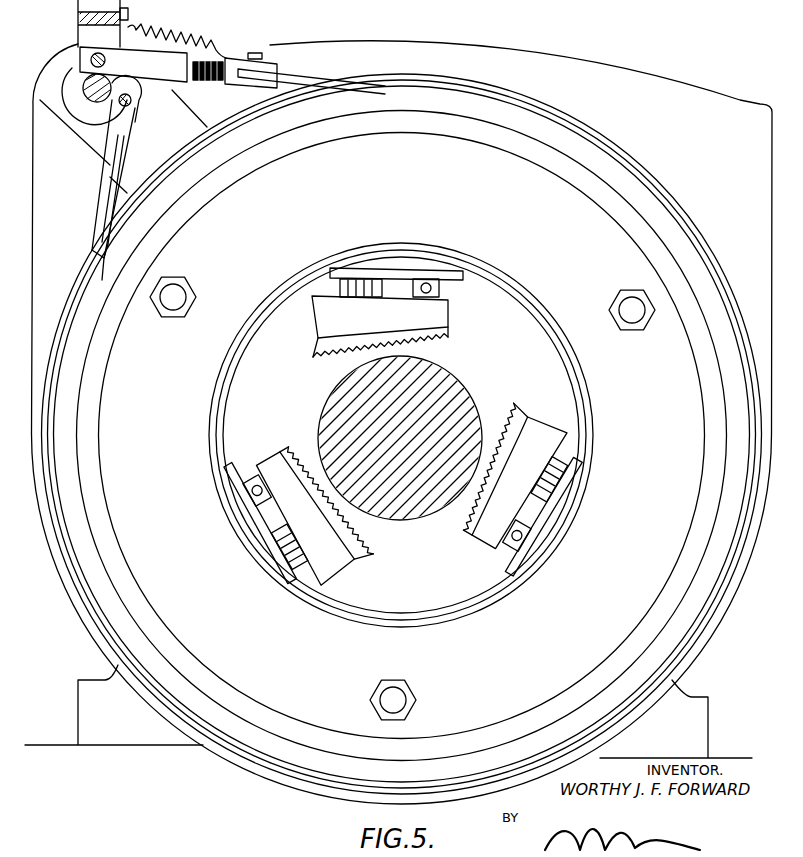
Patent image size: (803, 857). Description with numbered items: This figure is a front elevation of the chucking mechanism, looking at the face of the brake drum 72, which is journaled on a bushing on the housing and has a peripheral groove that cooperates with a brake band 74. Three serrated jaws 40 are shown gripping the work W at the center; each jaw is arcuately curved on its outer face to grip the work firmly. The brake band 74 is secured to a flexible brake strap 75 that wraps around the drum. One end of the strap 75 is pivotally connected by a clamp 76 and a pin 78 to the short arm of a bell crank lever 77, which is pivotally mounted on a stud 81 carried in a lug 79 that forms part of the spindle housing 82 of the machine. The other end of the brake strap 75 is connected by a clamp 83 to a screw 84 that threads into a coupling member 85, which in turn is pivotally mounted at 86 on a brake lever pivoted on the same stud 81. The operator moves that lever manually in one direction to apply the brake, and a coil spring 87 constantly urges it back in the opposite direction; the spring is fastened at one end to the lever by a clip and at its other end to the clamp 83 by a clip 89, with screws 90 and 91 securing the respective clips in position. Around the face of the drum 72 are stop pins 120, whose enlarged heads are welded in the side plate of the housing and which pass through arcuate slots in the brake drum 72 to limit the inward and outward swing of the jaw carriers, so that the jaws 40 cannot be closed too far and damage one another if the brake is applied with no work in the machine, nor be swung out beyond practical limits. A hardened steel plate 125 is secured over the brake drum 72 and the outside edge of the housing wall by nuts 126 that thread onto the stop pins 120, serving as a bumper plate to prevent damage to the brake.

The jaws 40 is at (328, 353).
The workpiece W is at (455, 381).
The brake drum 72 is at (68, 498).
The brake band 74 is at (100, 252).
The brake strap 75 is at (104, 197).
The clamp 76 is at (127, 158).
The bell crank lever 77 is at (140, 110).
The pin 78 is at (132, 101).
The lug 79 is at (62, 115).
The stud 81 is at (97, 104).
The spindle housing 82 is at (705, 103).
The clamp 83 is at (281, 71).
The screw 84 is at (215, 80).
The coupling member 85 is at (173, 72).
The pivot 86 is at (98, 53).
The coil spring 87 is at (194, 48).
The clip 89 is at (231, 54).
The screw 90 is at (128, 14).
The screw 91 is at (261, 55).
The stop pins 120 is at (174, 303).
The hardened steel plate 125 is at (200, 393).
The nuts 126 is at (188, 288).